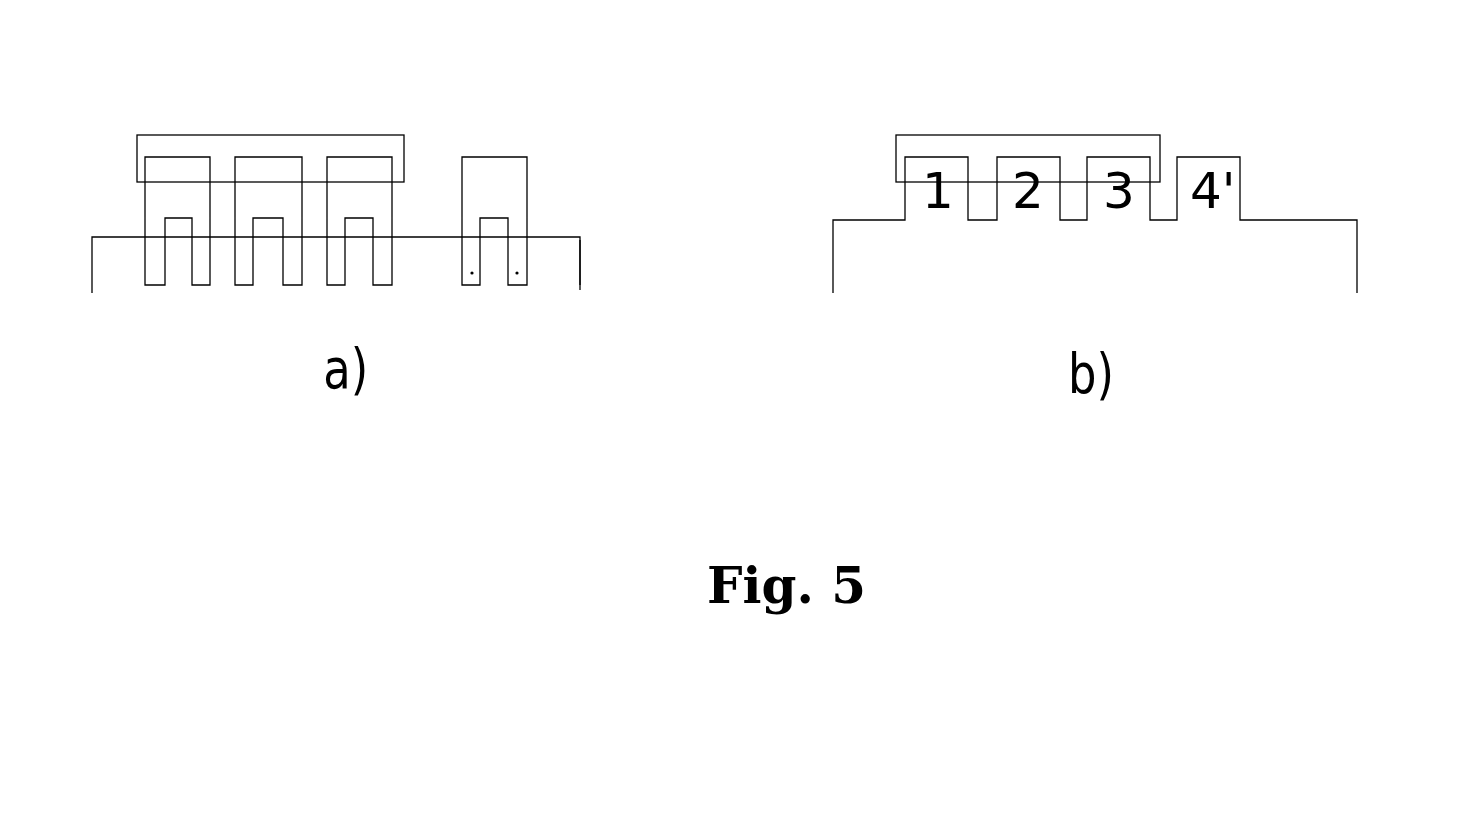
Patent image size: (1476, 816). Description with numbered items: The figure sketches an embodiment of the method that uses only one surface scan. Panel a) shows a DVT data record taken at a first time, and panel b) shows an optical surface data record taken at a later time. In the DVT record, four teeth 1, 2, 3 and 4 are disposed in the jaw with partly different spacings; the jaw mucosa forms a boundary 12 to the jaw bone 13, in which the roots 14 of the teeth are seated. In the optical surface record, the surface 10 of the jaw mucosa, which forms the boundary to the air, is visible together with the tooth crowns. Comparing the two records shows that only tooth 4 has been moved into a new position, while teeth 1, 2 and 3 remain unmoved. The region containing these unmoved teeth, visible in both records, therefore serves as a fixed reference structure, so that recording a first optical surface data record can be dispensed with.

The surface of the jaw mucosa 10 is at (1356, 218).
The boundary between jaw mucosa and jaw bone 12 is at (581, 245).
The jaw bone 13 is at (563, 262).
The roots 14 is at (472, 273).
The tooth 1 is at (177, 221).
The tooth 2 is at (268, 221).
The tooth 3 is at (359, 221).
The tooth 4 is at (494, 221).